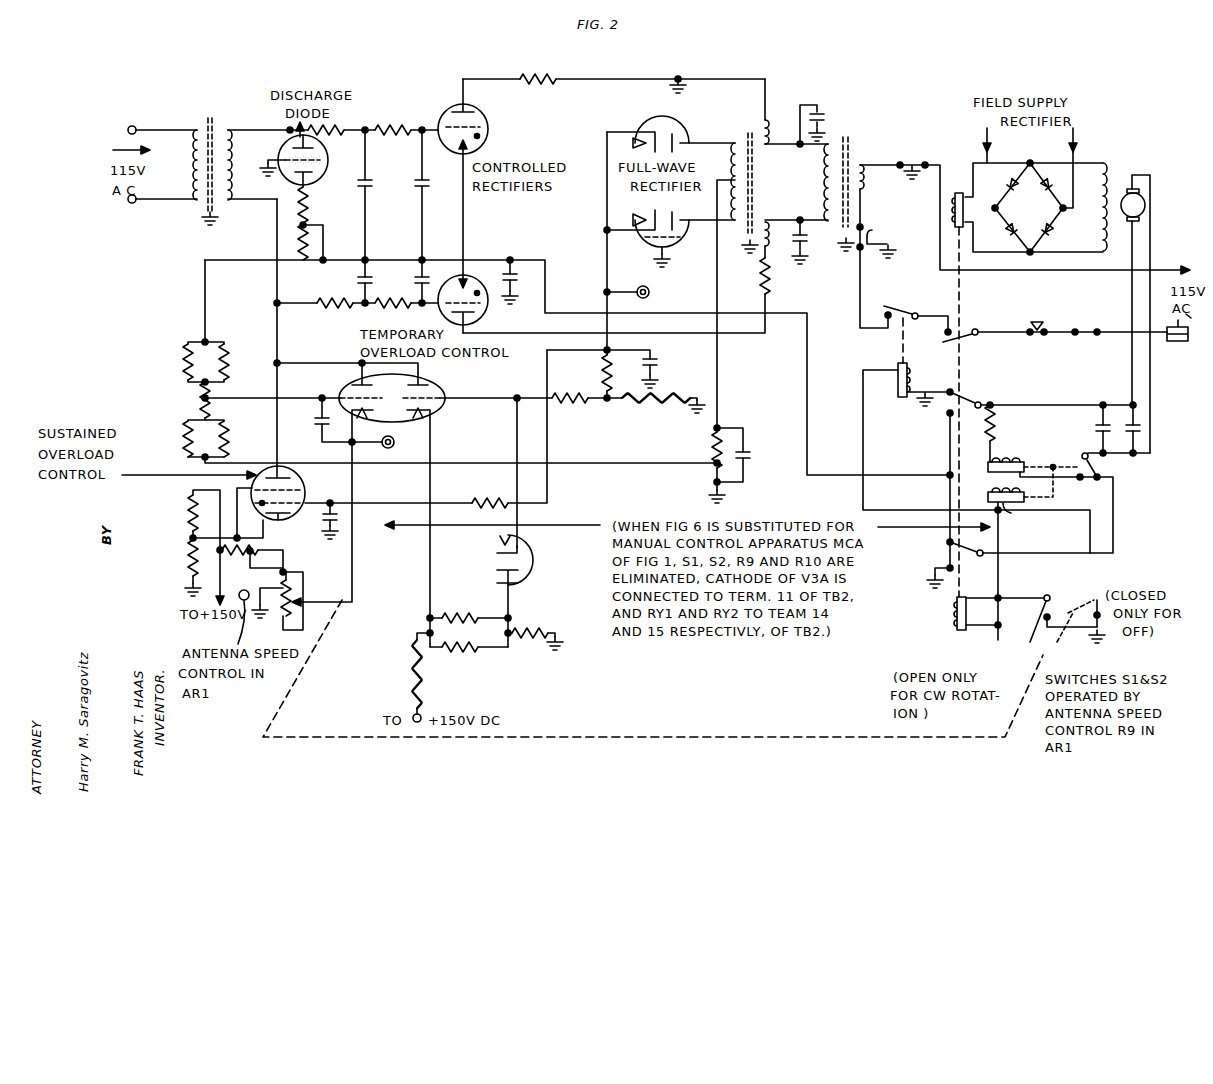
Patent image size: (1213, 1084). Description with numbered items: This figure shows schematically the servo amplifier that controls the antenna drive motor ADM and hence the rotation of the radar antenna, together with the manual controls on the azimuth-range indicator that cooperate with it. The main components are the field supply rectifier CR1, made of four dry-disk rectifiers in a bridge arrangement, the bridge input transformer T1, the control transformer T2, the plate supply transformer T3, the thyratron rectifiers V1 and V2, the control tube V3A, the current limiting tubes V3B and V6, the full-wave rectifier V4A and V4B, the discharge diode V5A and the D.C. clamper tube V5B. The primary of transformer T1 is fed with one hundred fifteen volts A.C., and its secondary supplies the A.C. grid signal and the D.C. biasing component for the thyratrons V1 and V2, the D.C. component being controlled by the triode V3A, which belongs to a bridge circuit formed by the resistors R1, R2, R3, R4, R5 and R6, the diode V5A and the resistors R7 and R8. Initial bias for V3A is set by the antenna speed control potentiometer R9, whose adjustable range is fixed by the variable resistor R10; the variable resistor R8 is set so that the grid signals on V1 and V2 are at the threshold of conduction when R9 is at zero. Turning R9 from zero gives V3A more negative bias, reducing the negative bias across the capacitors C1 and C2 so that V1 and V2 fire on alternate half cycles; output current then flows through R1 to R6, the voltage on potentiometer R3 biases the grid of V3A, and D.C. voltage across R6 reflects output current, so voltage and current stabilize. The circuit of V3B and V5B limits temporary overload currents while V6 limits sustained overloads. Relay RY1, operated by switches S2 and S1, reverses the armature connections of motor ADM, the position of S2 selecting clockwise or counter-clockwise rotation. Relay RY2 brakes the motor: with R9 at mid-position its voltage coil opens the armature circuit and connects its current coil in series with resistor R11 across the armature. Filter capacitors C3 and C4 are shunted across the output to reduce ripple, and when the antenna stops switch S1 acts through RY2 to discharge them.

The bridge input transformer T1 is at (208, 123).
The discharge diode V5A is at (314, 184).
The resistor R7 is at (317, 217).
The variable resistor R8 is at (306, 262).
The capacitor C1 is at (371, 182).
The capacitor C2 is at (372, 300).
The thyratron rectifier V1 is at (480, 118).
The thyratron rectifier V2 is at (487, 313).
The control tube V3A is at (344, 396).
The current limiting tube V3B is at (440, 387).
The full-wave rectifier V4A is at (687, 130).
The full-wave rectifier V4B is at (668, 258).
The control transformer T2 is at (750, 136).
The plate supply transformer T3 is at (853, 142).
The field supply rectifier CR1 is at (1045, 212).
The antenna drive motor ADM is at (1124, 192).
The bridge resistor R1 is at (184, 364).
The bridge resistor R2 is at (229, 358).
The potentiometer R3 is at (197, 400).
The bridge resistor R4 is at (186, 441).
The bridge resistor R5 is at (229, 435).
The potentiometer R6 is at (712, 451).
The current limiting tube V6 is at (306, 488).
The variable resistor R10 is at (266, 548).
The antenna speed control potentiometer R9 is at (304, 594).
The D.C. clamper tube V5B is at (530, 561).
The resistor R11 is at (984, 427).
The control relay RY2 is at (1012, 492).
The control relay RY1 is at (957, 615).
The manual switch S1 is at (1080, 621).
The manual switch S2 is at (1040, 610).
The filter capacitor C3 is at (1145, 422).
The filter capacitor C4 is at (1095, 424).